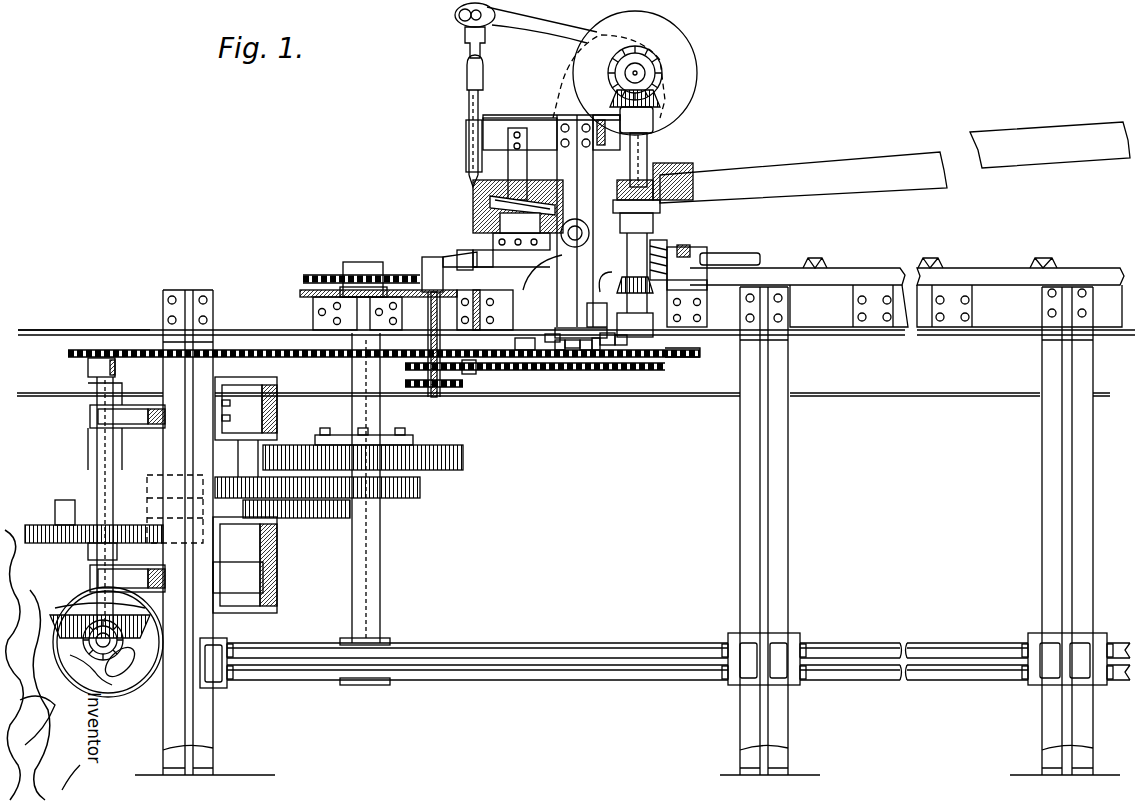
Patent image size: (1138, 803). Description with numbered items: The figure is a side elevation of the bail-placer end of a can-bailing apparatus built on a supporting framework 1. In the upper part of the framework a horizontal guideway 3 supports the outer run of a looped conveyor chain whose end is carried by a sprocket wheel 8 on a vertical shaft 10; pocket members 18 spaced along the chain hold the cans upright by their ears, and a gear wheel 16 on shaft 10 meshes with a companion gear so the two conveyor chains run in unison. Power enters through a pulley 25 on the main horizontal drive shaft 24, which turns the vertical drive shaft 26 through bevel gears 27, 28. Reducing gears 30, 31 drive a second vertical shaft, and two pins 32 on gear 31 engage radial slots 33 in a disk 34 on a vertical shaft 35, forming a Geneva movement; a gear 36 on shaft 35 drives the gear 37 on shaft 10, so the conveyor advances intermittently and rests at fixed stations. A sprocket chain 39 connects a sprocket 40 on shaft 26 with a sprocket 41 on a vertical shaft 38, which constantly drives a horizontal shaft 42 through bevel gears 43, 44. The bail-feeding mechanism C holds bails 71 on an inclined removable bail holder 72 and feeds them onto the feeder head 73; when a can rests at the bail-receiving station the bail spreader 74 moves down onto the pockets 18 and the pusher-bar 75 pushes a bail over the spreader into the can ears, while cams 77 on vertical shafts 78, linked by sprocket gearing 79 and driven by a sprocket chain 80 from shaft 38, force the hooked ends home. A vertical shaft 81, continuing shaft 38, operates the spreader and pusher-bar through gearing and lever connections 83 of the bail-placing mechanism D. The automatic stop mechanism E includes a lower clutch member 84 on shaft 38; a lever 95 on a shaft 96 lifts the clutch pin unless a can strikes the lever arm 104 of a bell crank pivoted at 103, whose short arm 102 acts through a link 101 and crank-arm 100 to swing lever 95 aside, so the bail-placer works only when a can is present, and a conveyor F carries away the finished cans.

The supporting framework 1 is at (846, 317).
The guideway 3 is at (875, 270).
The sprocket wheel 8 is at (343, 265).
The vertical shaft 10 is at (382, 557).
The gear wheel 16 is at (463, 465).
The pocket member 18 is at (815, 260).
The main horizontal drive shaft 24 is at (130, 692).
The pulley 25 is at (110, 696).
The vertical drive shaft 26 is at (95, 458).
The bevel gear 27 is at (105, 660).
The bevel gear 28 is at (75, 612).
The reducing gear 30 is at (88, 548).
The reducing gear 31 is at (40, 522).
The pin 32 is at (78, 494).
The radial slot 33 is at (260, 525).
The disk 34 is at (298, 516).
The vertical shaft 35 is at (262, 443).
The gear 36 is at (240, 477).
The gear 37 is at (410, 498).
The vertical shaft 38 is at (620, 346).
The sprocket chain 39 is at (240, 350).
The sprocket 40 is at (88, 365).
The sprocket 41 is at (668, 368).
The horizontal shaft 42 is at (763, 262).
The bevel gear 43 is at (690, 352).
The bevel gear 44 is at (707, 263).
The bail 71 is at (693, 170).
The bail holder 72 is at (943, 156).
The feeder head 73 is at (473, 210).
The bail spreader 74 is at (470, 242).
The pusher-bar 75 is at (467, 180).
The cam 77 is at (422, 262).
The vertical shaft 78 is at (463, 383).
The sprocket gearing 79 is at (470, 372).
The sprocket chain 80 is at (572, 350).
The vertical shaft 81 is at (648, 160).
The gearing and lever connections 83 is at (653, 55).
The lower clutch member 84 is at (660, 242).
The lever 95 is at (655, 193).
The shaft 96 is at (560, 350).
The crank-arm 100 is at (606, 355).
The link 101 is at (596, 350).
The short arm 102 is at (585, 350).
The pivot 103 is at (553, 345).
The lever arm 104 is at (522, 350).
The bail feeding mechanism C is at (805, 160).
The bail-placing mechanism D is at (516, 118).
The automatic stop mechanism E is at (671, 227).
The conveyor F is at (100, 330).